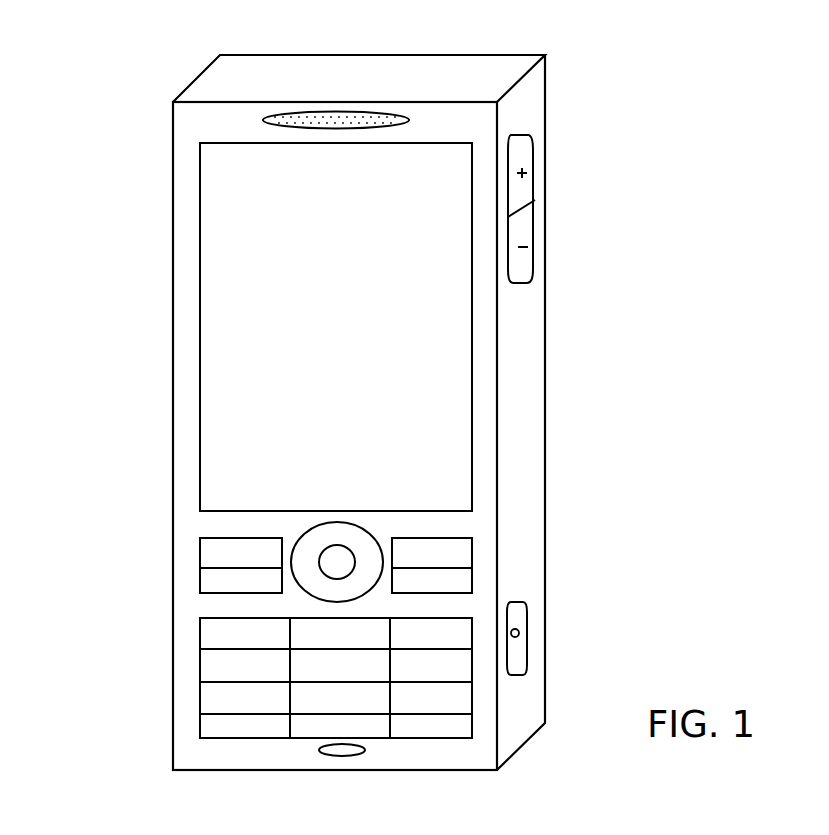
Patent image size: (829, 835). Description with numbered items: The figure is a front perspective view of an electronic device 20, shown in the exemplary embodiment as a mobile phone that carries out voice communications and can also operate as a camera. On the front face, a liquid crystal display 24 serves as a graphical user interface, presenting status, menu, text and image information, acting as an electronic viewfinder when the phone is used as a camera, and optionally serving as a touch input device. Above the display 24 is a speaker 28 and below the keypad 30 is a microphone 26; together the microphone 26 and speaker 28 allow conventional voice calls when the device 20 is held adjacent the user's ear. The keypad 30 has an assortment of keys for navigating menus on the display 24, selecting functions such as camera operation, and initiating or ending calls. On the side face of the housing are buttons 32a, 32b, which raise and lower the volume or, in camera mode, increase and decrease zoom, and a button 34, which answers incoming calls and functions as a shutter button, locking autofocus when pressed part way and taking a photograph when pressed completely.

The electronic device 20 is at (122, 254).
The liquid crystal display 24 is at (435, 370).
The microphone 26 is at (343, 752).
The speaker 28 is at (367, 118).
The keypad 30 is at (214, 669).
The button 32a is at (525, 152).
The button 32b is at (523, 223).
The button 34 is at (520, 620).